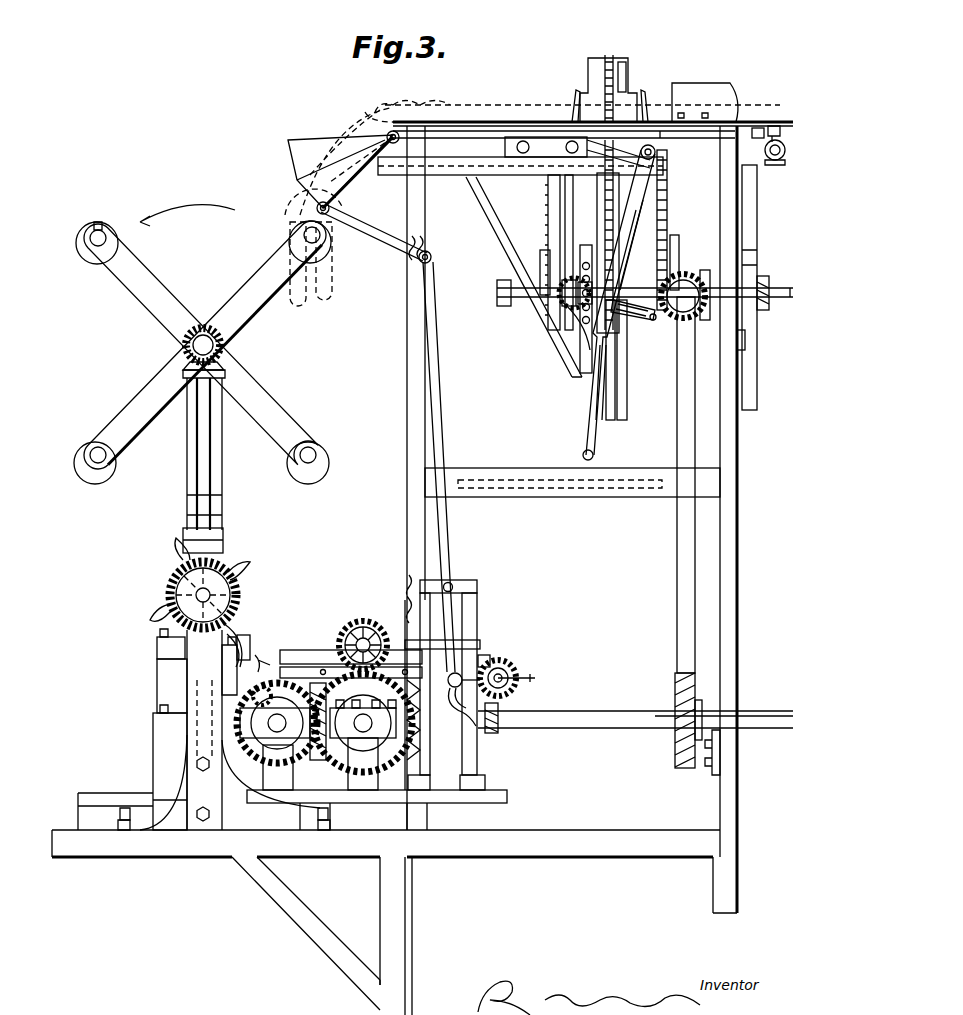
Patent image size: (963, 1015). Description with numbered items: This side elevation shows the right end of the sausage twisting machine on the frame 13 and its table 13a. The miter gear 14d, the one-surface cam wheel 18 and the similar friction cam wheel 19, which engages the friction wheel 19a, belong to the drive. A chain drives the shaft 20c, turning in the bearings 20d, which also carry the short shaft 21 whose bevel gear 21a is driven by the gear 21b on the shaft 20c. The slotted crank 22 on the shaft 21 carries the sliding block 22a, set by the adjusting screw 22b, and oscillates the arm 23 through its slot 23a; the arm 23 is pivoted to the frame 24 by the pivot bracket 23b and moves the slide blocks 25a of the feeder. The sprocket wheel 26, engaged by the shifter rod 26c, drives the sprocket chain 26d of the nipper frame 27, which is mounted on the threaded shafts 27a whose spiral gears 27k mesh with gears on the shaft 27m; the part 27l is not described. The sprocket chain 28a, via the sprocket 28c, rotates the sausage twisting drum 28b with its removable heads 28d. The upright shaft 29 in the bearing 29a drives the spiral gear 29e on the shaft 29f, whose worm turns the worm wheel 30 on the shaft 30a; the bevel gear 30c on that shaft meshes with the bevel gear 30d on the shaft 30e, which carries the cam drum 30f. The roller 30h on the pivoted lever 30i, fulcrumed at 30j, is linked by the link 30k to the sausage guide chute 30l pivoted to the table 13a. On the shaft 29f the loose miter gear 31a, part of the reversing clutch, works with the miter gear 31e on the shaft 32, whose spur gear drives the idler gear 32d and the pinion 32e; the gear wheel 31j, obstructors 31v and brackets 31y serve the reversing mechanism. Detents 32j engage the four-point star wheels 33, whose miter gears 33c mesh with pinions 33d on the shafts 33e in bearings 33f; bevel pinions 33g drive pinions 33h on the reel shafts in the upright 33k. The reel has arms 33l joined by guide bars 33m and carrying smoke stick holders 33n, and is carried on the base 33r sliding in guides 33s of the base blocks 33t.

The frame 13 is at (730, 780).
The table 13a is at (462, 122).
The miter gear 14d is at (690, 272).
The cam wheel 18 is at (627, 402).
The friction cam wheel 19 is at (757, 212).
The friction wheel 19a is at (757, 268).
The shaft 20c is at (768, 285).
The bearing 20d is at (583, 318).
The short shaft 21 is at (560, 296).
The bevel gear 21a is at (578, 300).
The bevel gear 21b is at (585, 330).
The slotted crank 22 is at (645, 318).
The sliding block 22a is at (620, 360).
The adjusting screw 22b is at (655, 322).
The arm 23 is at (640, 192).
The slot 23a is at (605, 378).
The pivot bracket 23b is at (596, 455).
The frame 24 is at (520, 152).
The slide block 25a is at (548, 205).
The sprocket wheel 26 is at (500, 285).
The shifter rod 26c is at (545, 250).
The sprocket chain 26d is at (565, 228).
The nipper frame 27 is at (763, 150).
The shaft 27a is at (752, 130).
The spiral gear 27k is at (775, 126).
The box 27l is at (648, 105).
The shaft 27m is at (776, 163).
The sprocket chain 28a is at (600, 58).
The sausage twisting drum 28b is at (622, 64).
The sprocket 28c is at (610, 55).
The removable head 28d is at (582, 100).
The upright shaft 29 is at (683, 528).
The bearing 29a is at (745, 345).
The spiral gear 29e is at (675, 742).
The shaft 29f is at (576, 718).
The worm wheel 30 is at (515, 663).
The shaft 30a is at (520, 678).
The bevel gear 30c is at (519, 672).
The bevel gear 30d is at (487, 658).
The shaft 30e is at (478, 718).
The cam drum 30f is at (440, 660).
The roller or pin 30h is at (466, 681).
The pivoted lever 30i is at (437, 416).
The fulcrum 30j is at (455, 585).
The link 30k is at (380, 236).
The sausage guide pan or chute 30l is at (323, 150).
The miter gear 31a is at (425, 750).
The miter gear 31e is at (363, 732).
The gear wheel 31j is at (363, 620).
The obstructor 31v is at (262, 652).
The bracket 31y is at (258, 693).
The shaft 32 is at (358, 728).
The idler gear 32d is at (272, 755).
The pinion 32e is at (160, 700).
The detent or restrainer 32j is at (248, 632).
The star wheel 33 is at (232, 575).
The miter gear 33c is at (168, 594).
The pinion 33d is at (183, 558).
The shaft 33e is at (213, 483).
The bearing 33f is at (190, 540).
The bevel pinion 33g is at (222, 366).
The pinion 33h is at (182, 346).
The upright 33k is at (190, 505).
The reel arm 33l is at (167, 304).
The guide bar 33m is at (98, 228).
The smoke stick holder 33n is at (92, 264).
The base 33r is at (172, 815).
The guide 33s is at (122, 830).
The base block 33t is at (104, 808).